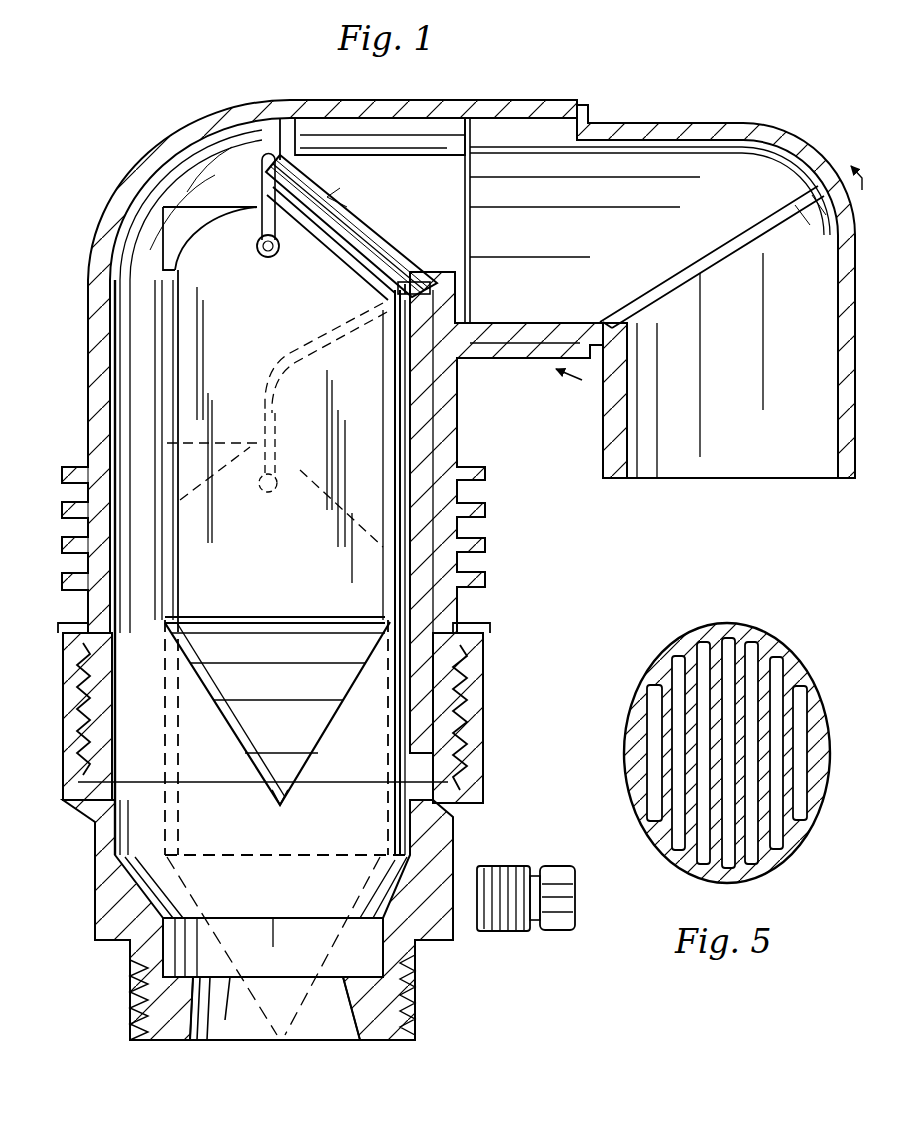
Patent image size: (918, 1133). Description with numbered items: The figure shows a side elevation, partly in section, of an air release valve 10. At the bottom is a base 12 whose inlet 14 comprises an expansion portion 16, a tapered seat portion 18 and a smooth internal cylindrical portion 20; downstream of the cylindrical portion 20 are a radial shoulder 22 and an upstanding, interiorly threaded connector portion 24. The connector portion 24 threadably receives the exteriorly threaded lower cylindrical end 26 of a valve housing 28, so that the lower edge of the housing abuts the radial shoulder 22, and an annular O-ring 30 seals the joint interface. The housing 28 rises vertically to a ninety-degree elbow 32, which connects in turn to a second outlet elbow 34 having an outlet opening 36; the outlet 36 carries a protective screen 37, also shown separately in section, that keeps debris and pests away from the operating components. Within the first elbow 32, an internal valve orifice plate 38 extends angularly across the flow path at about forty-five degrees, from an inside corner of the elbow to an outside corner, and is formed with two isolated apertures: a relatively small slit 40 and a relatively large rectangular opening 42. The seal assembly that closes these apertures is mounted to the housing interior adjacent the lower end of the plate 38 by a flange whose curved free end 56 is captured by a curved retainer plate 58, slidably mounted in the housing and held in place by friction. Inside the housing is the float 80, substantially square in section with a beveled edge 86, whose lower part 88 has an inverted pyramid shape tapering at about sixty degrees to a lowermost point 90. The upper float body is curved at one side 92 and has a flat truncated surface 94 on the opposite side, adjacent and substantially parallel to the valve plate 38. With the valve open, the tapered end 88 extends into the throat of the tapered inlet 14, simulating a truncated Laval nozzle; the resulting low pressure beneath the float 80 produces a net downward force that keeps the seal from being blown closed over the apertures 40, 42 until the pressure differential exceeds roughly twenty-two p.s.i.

In FIG. 1, the air release valve 10 is at (708, 66).
In FIG. 1, the base 12 is at (90, 884).
In FIG. 1, the inlet 14 is at (338, 1030).
In FIG. 1, the expansion portion 16 is at (372, 955).
In FIG. 1, the tapered seat portion 18 is at (158, 900).
In FIG. 1, the smooth internal cylindrical portion 20 is at (398, 820).
In FIG. 1, the radial shoulder 22 is at (120, 772).
In FIG. 1, the connector portion 24 is at (75, 668).
In FIG. 1, the lower cylindrical end 26 is at (95, 698).
In FIG. 1, the valve housing 28 is at (84, 418).
In FIG. 1, the O-ring 30 is at (470, 823).
In FIG. 1, the elbow 32 is at (207, 128).
In FIG. 1, the outlet elbow 34 is at (786, 136).
In FIG. 1, the outlet opening 36 is at (803, 470).
In FIG. 1, the protective screen 37 is at (712, 262).
In FIG. 5, the protective screen 37 is at (792, 636).
In FIG. 1, the valve orifice plate 38 is at (372, 222).
In FIG. 1, the aperture 40 is at (312, 180).
In FIG. 1, the aperture 42 is at (378, 243).
In FIG. 1, the curved free end 56 is at (425, 293).
In FIG. 1, the curved retainer plate 58 is at (425, 498).
In FIG. 1, the float 80 is at (252, 322).
In FIG. 1, the beveled edge 86 is at (178, 568).
In FIG. 1, the lower part of the float 88 is at (330, 685).
In FIG. 1, the lowermost point 90 is at (278, 797).
In FIG. 1, the curved side 92 is at (194, 245).
In FIG. 1, the flat truncated surface 94 is at (322, 268).